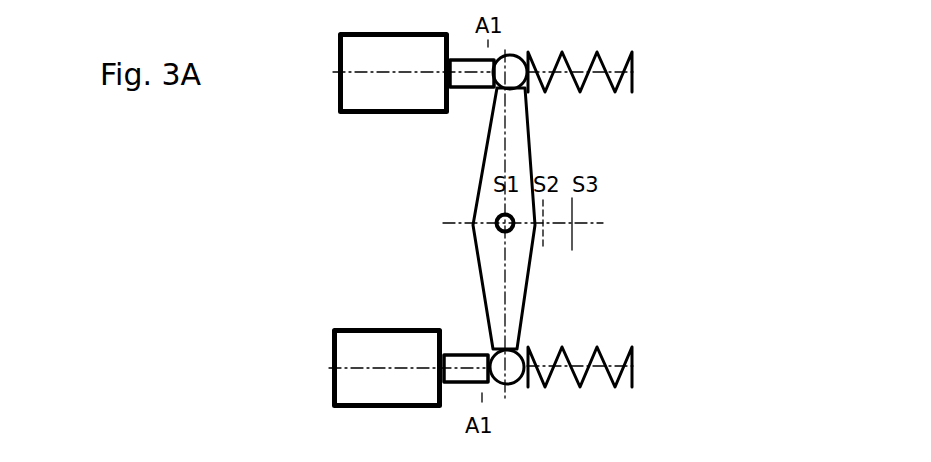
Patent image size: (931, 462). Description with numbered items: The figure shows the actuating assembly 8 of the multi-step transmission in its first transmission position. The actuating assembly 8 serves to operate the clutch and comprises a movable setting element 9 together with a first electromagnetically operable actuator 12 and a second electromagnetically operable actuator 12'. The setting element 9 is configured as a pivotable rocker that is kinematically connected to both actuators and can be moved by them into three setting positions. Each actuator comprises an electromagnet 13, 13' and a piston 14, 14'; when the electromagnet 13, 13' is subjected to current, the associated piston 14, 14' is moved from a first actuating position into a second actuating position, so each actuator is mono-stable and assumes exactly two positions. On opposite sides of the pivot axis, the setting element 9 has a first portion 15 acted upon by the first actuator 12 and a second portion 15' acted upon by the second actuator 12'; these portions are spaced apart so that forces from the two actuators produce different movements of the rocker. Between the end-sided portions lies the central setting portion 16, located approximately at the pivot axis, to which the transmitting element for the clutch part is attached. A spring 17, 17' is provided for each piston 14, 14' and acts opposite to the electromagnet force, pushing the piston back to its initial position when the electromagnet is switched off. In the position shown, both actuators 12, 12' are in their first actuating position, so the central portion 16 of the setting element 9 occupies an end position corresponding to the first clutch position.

The actuating assembly 8 is at (683, 207).
The setting element 9 is at (533, 143).
The first electromagnetically operable actuator 12 is at (363, 104).
The second electromagnetically operable actuator 12' is at (366, 334).
The electromagnet 13 is at (394, 103).
The electromagnet 13' is at (387, 343).
The piston 14 is at (463, 114).
The piston 14' is at (451, 331).
The first portion 15 is at (524, 52).
The second portion 15' is at (525, 392).
The setting portion 16 is at (482, 233).
The spring 17 is at (582, 52).
The spring 17' is at (586, 340).